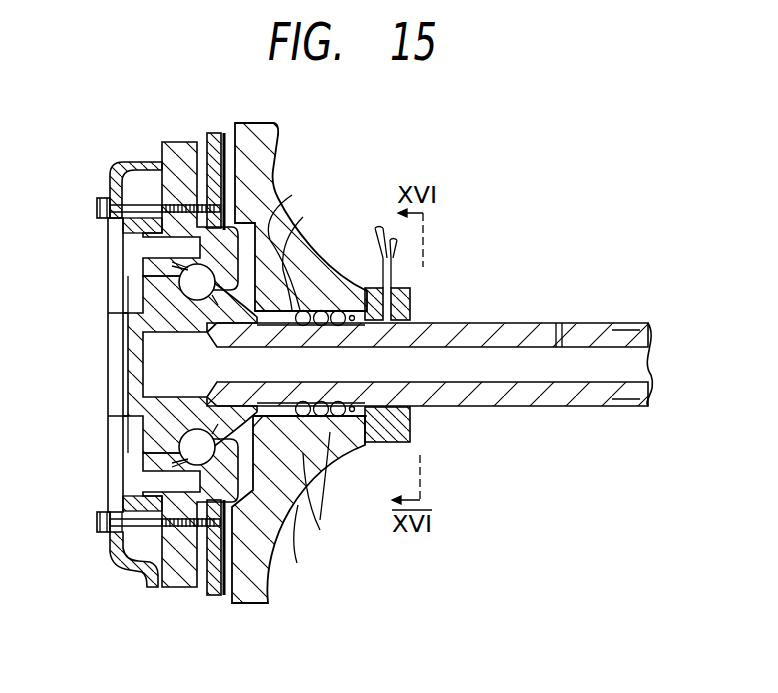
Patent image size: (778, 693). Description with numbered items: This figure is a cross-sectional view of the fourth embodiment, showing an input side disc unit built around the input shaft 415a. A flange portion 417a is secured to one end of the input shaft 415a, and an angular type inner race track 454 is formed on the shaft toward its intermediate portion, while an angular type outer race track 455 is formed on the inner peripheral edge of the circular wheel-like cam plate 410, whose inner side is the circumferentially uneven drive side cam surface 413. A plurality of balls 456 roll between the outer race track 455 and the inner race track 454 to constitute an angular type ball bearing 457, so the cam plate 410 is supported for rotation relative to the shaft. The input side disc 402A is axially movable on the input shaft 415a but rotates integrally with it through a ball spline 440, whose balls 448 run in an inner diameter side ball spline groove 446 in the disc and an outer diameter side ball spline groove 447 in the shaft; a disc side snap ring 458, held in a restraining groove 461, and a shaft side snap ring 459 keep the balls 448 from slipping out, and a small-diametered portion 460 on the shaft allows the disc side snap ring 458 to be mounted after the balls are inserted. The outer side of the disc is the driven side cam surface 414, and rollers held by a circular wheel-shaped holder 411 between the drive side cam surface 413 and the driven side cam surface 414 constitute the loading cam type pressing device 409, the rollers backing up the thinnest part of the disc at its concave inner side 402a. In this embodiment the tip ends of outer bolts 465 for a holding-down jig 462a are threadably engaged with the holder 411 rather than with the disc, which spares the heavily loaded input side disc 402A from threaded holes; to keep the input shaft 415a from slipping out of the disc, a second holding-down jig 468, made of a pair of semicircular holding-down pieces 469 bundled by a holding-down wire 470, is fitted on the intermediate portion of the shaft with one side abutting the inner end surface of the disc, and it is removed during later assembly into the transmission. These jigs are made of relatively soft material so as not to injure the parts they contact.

The pressing device 409 is at (170, 148).
The drive side cam surface 413 is at (213, 140).
The outer bolts 465 is at (128, 182).
The inner side 402a is at (282, 178).
The angular type ball bearing 457 is at (332, 191).
The inner diameter side ball spline groove 446 is at (312, 254).
The disc side snap ring 458 is at (338, 302).
The holding-down wire 470 is at (378, 226).
The second holding-down jig 468 is at (412, 300).
The small-diametered portion 460 is at (440, 323).
The input shaft 415a is at (610, 326).
The balls 456 is at (172, 265).
The inner race track 454 is at (175, 275).
The balls 448 is at (305, 400).
The outer race track 455 is at (150, 444).
The flange portion 417a is at (160, 440).
The holding-down jig 462a is at (114, 548).
The cam plate 410 is at (165, 587).
The holder 411 is at (206, 596).
The driven side cam surface 414 is at (226, 596).
The input side disc 402A is at (262, 604).
The outer diameter side ball spline groove 447 is at (301, 548).
The shaft side snap ring 459 is at (322, 505).
The ball spline 440 is at (366, 523).
The restraining groove 461 is at (360, 436).
The holding-down pieces 469 is at (412, 430).